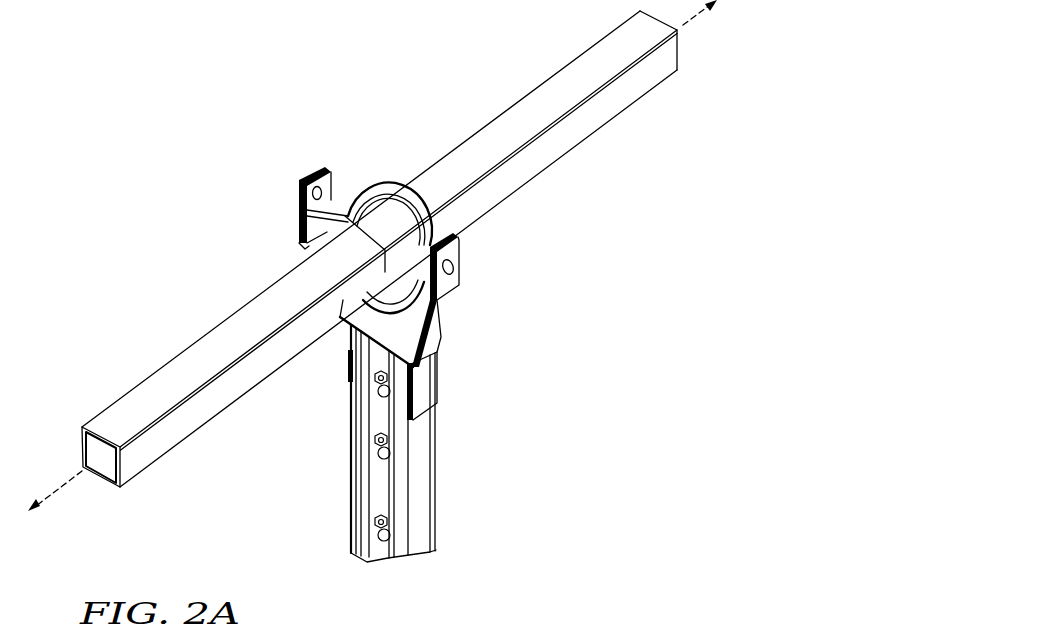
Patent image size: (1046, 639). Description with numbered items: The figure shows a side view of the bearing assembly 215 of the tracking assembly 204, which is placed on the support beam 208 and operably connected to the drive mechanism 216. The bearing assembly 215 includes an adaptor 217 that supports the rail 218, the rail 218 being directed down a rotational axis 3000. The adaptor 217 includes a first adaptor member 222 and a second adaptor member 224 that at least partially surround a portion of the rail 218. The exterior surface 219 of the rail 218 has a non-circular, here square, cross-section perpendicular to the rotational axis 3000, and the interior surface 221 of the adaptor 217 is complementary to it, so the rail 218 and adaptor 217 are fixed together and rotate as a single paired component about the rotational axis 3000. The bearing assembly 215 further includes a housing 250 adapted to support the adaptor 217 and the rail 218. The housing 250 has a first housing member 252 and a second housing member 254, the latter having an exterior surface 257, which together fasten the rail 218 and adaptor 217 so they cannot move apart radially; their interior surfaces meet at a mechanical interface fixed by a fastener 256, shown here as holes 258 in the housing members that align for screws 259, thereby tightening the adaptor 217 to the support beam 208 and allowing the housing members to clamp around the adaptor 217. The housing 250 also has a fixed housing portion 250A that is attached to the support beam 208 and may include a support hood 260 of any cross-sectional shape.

The tracking assembly 204 is at (284, 65).
The rotational axis 3000 is at (693, 15).
The adaptor 217 is at (380, 191).
The interior surface 221 is at (356, 210).
The bearing assembly 215 is at (274, 158).
The screws 259 is at (313, 172).
The holes 258 is at (299, 189).
The housing 250 is at (299, 206).
The exterior surface 257 is at (302, 230).
The exterior surface 219 is at (307, 252).
The second adaptor member 224 is at (430, 228).
The fastener 256 is at (461, 248).
The second housing member 254 is at (433, 278).
The first housing member 252 is at (433, 288).
The support hood 260 is at (412, 327).
The drive mechanism 216 is at (413, 383).
The fixed housing portion 250A is at (425, 410).
The first adaptor member 222 is at (350, 368).
The rail 218 is at (163, 455).
The support beam 208 is at (352, 490).